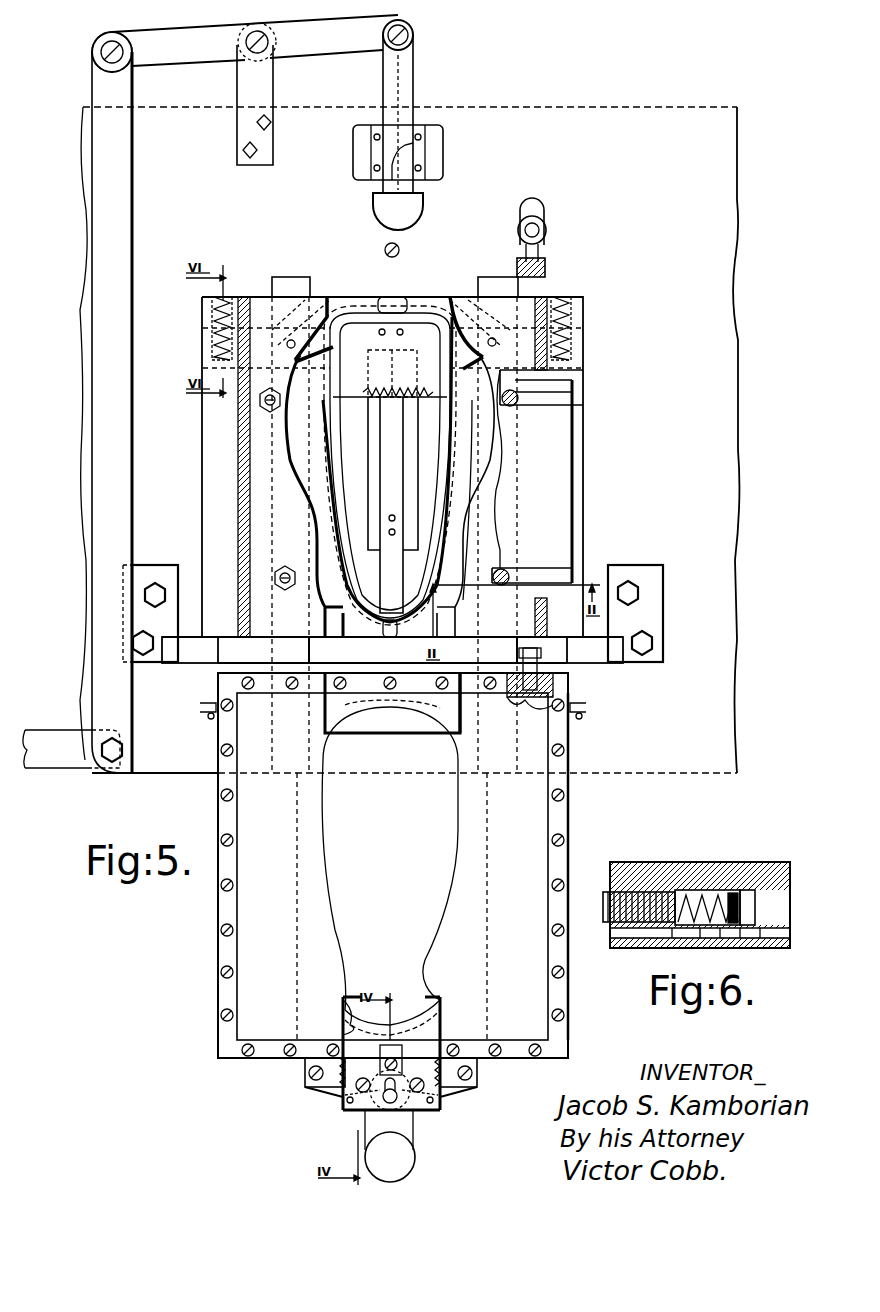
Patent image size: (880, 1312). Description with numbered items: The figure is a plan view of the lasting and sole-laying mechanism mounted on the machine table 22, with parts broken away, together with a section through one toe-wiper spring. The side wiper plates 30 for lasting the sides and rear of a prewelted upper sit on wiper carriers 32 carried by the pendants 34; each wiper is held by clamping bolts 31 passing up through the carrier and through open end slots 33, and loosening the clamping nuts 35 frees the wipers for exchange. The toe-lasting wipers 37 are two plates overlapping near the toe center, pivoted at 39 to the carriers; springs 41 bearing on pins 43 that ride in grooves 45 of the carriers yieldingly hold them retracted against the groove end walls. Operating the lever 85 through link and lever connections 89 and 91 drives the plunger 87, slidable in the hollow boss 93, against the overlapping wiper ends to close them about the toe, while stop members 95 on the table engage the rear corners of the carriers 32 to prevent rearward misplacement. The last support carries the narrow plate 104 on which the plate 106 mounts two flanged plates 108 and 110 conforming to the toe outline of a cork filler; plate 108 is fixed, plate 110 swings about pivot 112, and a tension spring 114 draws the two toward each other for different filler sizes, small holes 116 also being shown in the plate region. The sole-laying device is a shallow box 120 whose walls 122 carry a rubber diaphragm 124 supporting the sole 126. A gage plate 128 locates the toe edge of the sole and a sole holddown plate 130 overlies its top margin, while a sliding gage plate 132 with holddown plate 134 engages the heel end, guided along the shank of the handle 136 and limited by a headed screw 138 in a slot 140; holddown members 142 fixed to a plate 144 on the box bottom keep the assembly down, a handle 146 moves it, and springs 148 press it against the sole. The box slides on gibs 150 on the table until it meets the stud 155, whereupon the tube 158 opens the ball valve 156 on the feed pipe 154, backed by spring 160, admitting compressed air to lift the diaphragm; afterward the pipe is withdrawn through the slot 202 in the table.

In FIG. 5, the table 22 is at (254, 123).
In FIG. 5, the side wiper plates 30 is at (313, 475).
In FIG. 6, the side wiper plates 30 is at (768, 938).
In FIG. 5, the clamping bolts 31 is at (516, 406).
In FIG. 5, the wiper carriers 32 is at (375, 469).
In FIG. 6, the wiper carriers 32 is at (717, 865).
In FIG. 5, the open end slots 33 is at (583, 402).
In FIG. 5, the pendants 34 is at (238, 502).
In FIG. 5, the clamping nuts 35 is at (262, 406).
In FIG. 5, the toe-lasting wipers 37 is at (322, 290).
In FIG. 5, the pivot 39 is at (292, 349).
In FIG. 5, the springs 41 is at (212, 338).
In FIG. 6, the springs 41 is at (735, 892).
In FIG. 6, the pins 43 is at (748, 895).
In FIG. 6, the grooves 45 is at (695, 902).
In FIG. 5, the lever 85 is at (71, 749).
In FIG. 5, the plunger 87 is at (407, 66).
In FIG. 5, the link connection 89 is at (102, 610).
In FIG. 5, the lever connection 91 is at (229, 50).
In FIG. 5, the hollow boss 93 is at (443, 132).
In FIG. 5, the stop members 95 is at (196, 665).
In FIG. 5, the narrow plate 104 is at (384, 450).
In FIG. 5, the plate 106 is at (408, 318).
In FIG. 5, the plate 108 is at (417, 335).
In FIG. 5, the plate 110 is at (341, 300).
In FIG. 5, the pivot 112 is at (380, 328).
In FIG. 5, the tension spring 114 is at (385, 398).
In FIG. 5, the holes 116 is at (395, 518).
In FIG. 5, the box 120 is at (582, 792).
In FIG. 5, the walls 122 is at (560, 860).
In FIG. 5, the diaphragm 124 is at (537, 828).
In FIG. 5, the sole 126 is at (390, 855).
In FIG. 5, the gage plate 128 is at (448, 718).
In FIG. 5, the sole holddown plate 130 is at (363, 722).
In FIG. 5, the gage plate 132 is at (347, 1005).
In FIG. 5, the holddown plate 134 is at (425, 1000).
In FIG. 5, the handle 136 is at (390, 1146).
In FIG. 5, the headed screw 138 is at (388, 1105).
In FIG. 5, the slot 140 is at (418, 1111).
In FIG. 5, the holddown members 142 is at (320, 1090).
In FIG. 5, the plate 144 is at (322, 1098).
In FIG. 5, the handle 146 is at (399, 1063).
In FIG. 5, the springs 148 is at (350, 1065).
In FIG. 5, the gibs 150 is at (309, 658).
In FIG. 5, the pipe 154 is at (547, 232).
In FIG. 5, the stud 155 is at (385, 247).
In FIG. 5, the ball valve 156 is at (544, 266).
In FIG. 5, the tube 158 is at (540, 668).
In FIG. 5, the spring 160 is at (528, 265).
In FIG. 5, the slot 202 is at (534, 204).